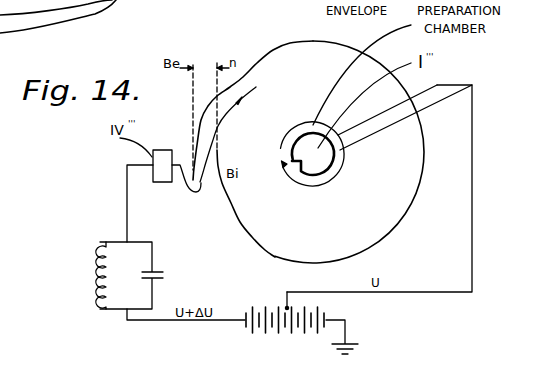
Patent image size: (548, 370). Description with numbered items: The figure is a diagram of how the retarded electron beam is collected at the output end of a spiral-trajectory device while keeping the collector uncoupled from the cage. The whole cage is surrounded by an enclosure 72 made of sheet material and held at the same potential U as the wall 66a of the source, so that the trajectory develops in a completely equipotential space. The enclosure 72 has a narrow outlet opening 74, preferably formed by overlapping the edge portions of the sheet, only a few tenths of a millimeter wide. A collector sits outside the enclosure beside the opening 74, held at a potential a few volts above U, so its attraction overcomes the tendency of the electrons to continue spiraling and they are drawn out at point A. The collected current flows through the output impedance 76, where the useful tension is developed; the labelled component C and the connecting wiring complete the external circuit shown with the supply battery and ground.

The enclosure 72 is at (396, 228).
The outlet opening 74 is at (214, 163).
The output impedance 76 is at (128, 288).
The wall of the source 66a is at (341, 162).
The electrode point A is at (200, 182).
The component C is at (162, 157).